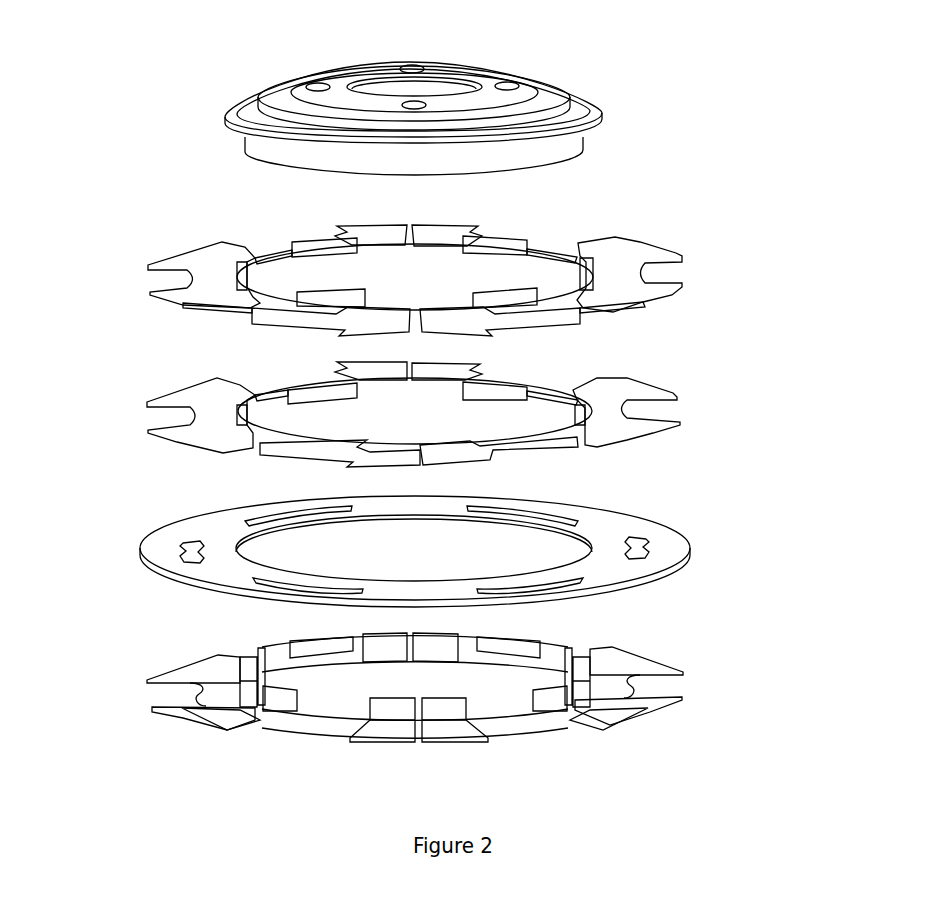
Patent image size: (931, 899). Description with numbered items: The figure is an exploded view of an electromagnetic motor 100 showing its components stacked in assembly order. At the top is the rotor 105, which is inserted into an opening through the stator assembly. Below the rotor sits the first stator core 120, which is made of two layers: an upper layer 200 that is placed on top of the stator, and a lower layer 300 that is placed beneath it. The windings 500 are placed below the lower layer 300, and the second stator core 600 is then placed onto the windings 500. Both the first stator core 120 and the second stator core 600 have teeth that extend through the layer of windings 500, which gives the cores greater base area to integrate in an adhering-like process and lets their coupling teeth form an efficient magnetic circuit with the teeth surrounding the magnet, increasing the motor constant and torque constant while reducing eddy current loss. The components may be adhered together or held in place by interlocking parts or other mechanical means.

The motor 100 is at (83, 150).
The rotor 105 is at (743, 139).
The first stator core 120 is at (118, 280).
The upper layer 200 is at (750, 281).
The lower layer 300 is at (747, 411).
The windings 500 is at (750, 545).
The second stator core 600 is at (745, 693).